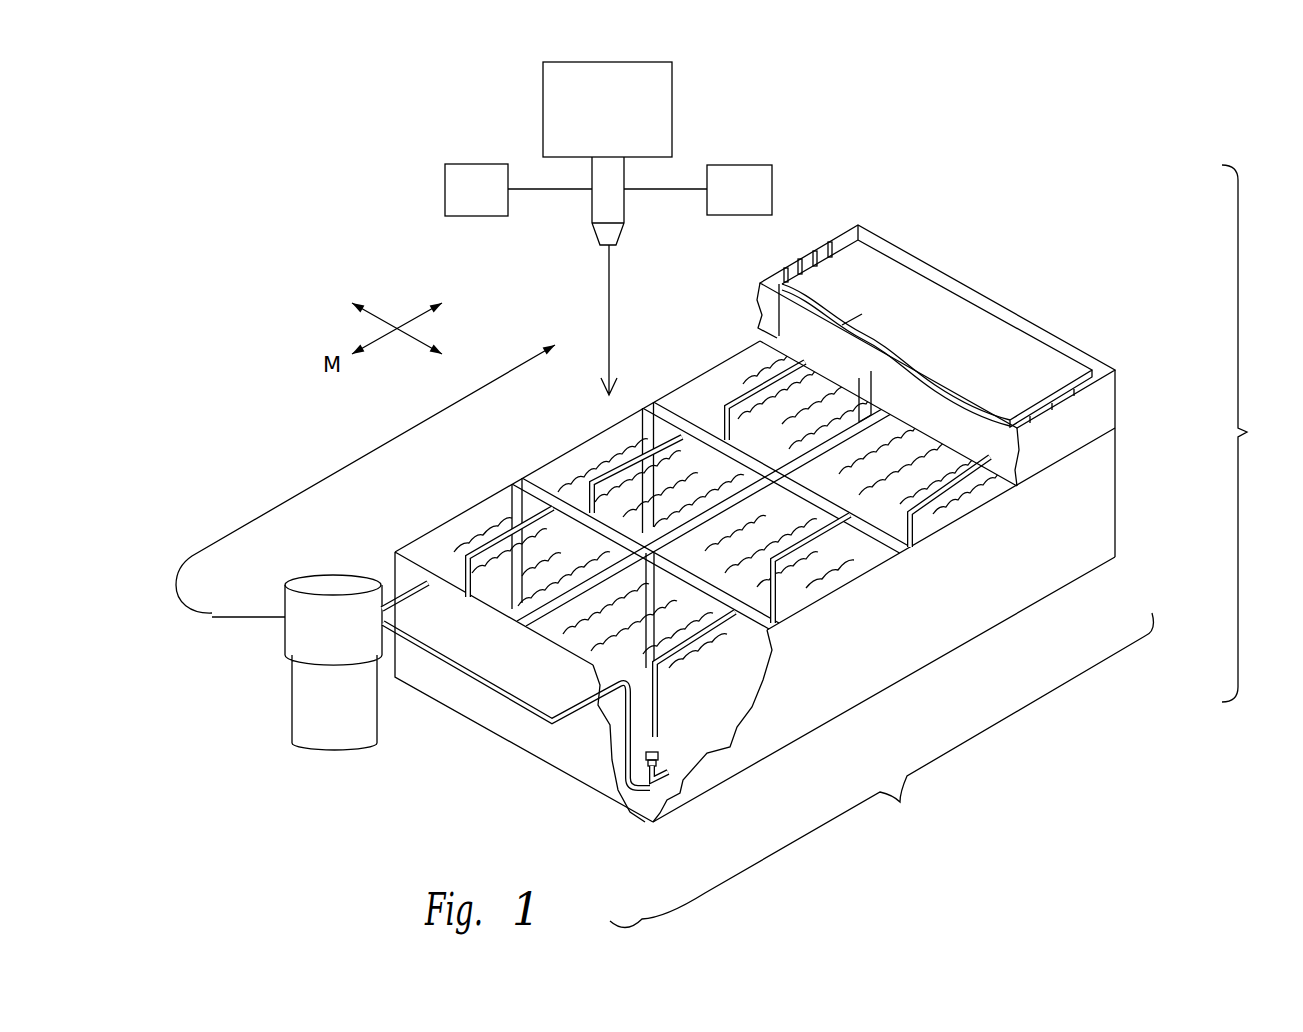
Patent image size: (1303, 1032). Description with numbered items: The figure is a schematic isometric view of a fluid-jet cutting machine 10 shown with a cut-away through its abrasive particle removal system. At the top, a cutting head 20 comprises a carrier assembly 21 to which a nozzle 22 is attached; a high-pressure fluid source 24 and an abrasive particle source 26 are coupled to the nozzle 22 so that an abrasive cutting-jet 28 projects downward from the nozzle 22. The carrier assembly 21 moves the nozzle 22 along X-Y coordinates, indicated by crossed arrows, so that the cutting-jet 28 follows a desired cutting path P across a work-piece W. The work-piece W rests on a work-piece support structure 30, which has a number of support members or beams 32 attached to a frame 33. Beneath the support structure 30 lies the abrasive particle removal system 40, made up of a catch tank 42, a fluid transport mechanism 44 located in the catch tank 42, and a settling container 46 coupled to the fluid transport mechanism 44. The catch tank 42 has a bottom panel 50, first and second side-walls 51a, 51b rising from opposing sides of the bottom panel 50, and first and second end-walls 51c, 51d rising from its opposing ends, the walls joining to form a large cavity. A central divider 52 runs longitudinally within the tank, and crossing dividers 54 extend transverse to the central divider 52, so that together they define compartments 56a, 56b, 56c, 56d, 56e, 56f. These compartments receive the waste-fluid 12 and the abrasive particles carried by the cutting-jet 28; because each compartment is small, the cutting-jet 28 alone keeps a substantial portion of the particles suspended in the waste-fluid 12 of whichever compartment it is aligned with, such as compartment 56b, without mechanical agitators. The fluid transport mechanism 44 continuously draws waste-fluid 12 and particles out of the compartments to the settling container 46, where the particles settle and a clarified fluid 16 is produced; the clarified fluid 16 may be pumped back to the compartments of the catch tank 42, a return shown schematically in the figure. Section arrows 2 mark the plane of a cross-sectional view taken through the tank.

The fluid-jet cutting machine 10 is at (1253, 433).
The waste-fluid 12 is at (760, 581).
The clarified fluid 16 is at (400, 435).
The cutting head 20 is at (518, 128).
The carrier assembly 21 is at (672, 92).
The nozzle 22 is at (592, 212).
The high-pressure fluid source 24 is at (445, 190).
The abrasive particle source 26 is at (772, 180).
The abrasive cutting-jet 28 is at (611, 303).
The work-piece support structure 30 is at (963, 340).
The support members or beams 32 is at (815, 251).
The frame 33 is at (1042, 326).
The abrasive particle removal system 40 is at (881, 770).
The catch tank 42 is at (965, 642).
The fluid transport mechanism 44 is at (675, 745).
The settling container 46 is at (292, 733).
The bottom panel 50 is at (694, 732).
The first side-wall 51a is at (900, 687).
The second side-wall 51b is at (500, 500).
The first end-wall 51c is at (512, 742).
The second end-wall 51d is at (1150, 515).
The central divider 52 is at (565, 615).
The crossing dividers 54 is at (760, 468).
The compartment 56a is at (500, 522).
The compartment 56b is at (615, 438).
The compartment 56c is at (778, 390).
The compartment 56d is at (700, 630).
The compartment 56e is at (790, 575).
The compartment 56f is at (920, 490).
The section line 2 is at (690, 405).
The work-piece W is at (893, 260).
The cutting path P is at (849, 312).